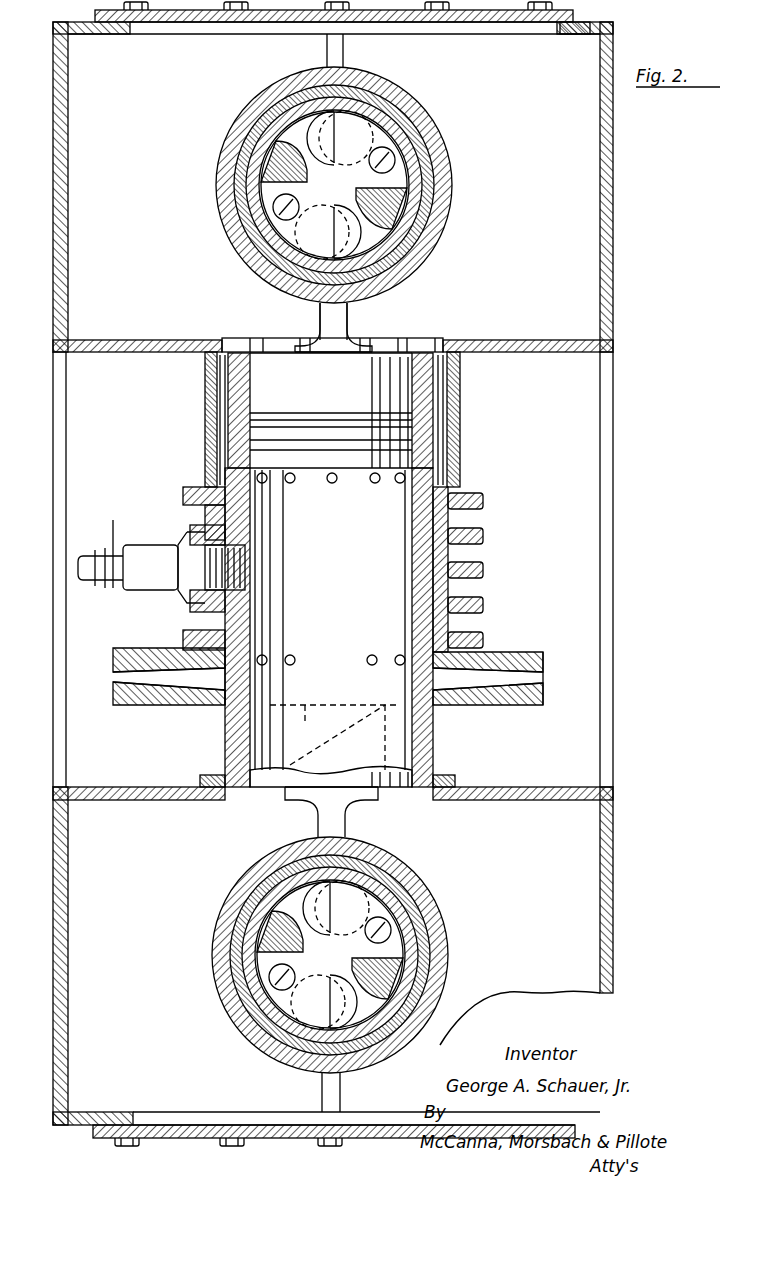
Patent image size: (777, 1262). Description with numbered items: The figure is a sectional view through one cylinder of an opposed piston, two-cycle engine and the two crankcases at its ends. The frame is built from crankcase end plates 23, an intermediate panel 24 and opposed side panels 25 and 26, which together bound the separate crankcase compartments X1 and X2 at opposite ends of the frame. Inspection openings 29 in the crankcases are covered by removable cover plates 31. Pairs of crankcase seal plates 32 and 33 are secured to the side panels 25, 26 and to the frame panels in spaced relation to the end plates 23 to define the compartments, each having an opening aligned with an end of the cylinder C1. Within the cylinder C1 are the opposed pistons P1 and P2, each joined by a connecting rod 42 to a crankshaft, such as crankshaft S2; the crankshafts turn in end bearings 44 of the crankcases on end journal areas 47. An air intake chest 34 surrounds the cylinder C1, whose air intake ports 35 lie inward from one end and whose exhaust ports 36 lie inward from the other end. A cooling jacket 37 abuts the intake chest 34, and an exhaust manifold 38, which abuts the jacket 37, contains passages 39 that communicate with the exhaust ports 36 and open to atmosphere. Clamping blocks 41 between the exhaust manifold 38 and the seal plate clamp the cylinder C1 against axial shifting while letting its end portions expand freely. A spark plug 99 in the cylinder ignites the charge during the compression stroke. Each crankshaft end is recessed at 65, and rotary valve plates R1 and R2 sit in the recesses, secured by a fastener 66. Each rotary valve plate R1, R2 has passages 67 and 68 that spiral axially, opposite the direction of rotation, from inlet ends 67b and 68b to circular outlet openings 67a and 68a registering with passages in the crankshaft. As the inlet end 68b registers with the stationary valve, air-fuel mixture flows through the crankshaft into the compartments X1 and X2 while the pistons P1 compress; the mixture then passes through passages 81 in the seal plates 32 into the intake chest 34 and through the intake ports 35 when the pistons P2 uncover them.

The crankcase end plate 23 is at (582, 24).
The intermediate panel 24 is at (556, 392).
The side panel 25 is at (613, 262).
The side panel 26 is at (53, 280).
The inspection opening 29 is at (552, 30).
The cover plate 31 is at (472, 20).
The crankcase seal plate 32 is at (125, 340).
The crankcase seal plate 33 is at (130, 787).
The air intake chest 34 is at (456, 396).
The air intake port 35 is at (398, 484).
The exhaust port 36 is at (268, 656).
The cooling jacket 37 is at (478, 536).
The exhaust manifold 38 is at (490, 696).
The exhaust passage 39 is at (543, 688).
The clamping block 41 is at (304, 705).
The connecting rod 42 is at (348, 822).
The end bearing 44 is at (405, 232).
The end journal area 47 is at (395, 200).
The recess 65 is at (410, 108).
The fastener 66 is at (432, 178).
The passage 67 is at (250, 128).
The opening 67a is at (318, 112).
The inlet end 67b is at (262, 186).
The passage 68 is at (400, 212).
The opening 68a is at (358, 232).
The inlet end 68b is at (430, 196).
The passage 81 is at (223, 340).
The spark plug 99 is at (148, 552).
The piston P1 is at (318, 462).
The piston P2 is at (328, 770).
The cylinder C1 is at (422, 540).
The rotary valve plate R1 is at (252, 246).
The rotary valve plate R2 is at (435, 932).
The crankshaft S2 is at (440, 910).
The crankcase compartment X1 is at (540, 260).
The crankcase compartment X2 is at (548, 890).